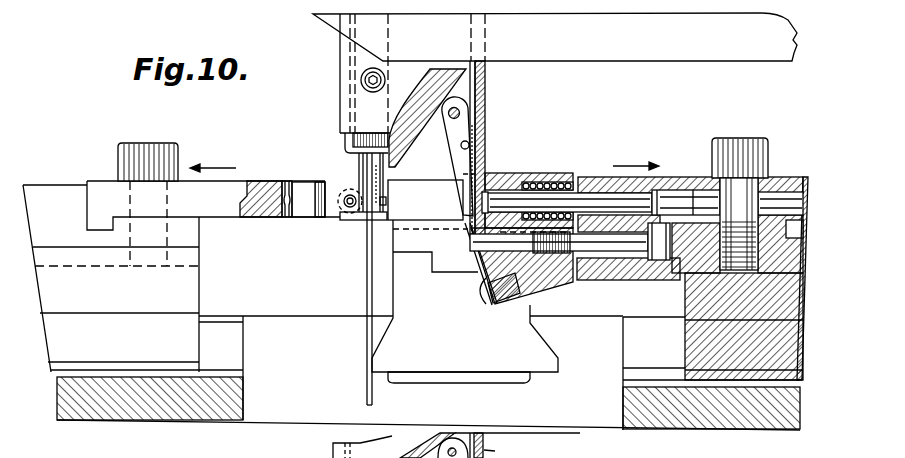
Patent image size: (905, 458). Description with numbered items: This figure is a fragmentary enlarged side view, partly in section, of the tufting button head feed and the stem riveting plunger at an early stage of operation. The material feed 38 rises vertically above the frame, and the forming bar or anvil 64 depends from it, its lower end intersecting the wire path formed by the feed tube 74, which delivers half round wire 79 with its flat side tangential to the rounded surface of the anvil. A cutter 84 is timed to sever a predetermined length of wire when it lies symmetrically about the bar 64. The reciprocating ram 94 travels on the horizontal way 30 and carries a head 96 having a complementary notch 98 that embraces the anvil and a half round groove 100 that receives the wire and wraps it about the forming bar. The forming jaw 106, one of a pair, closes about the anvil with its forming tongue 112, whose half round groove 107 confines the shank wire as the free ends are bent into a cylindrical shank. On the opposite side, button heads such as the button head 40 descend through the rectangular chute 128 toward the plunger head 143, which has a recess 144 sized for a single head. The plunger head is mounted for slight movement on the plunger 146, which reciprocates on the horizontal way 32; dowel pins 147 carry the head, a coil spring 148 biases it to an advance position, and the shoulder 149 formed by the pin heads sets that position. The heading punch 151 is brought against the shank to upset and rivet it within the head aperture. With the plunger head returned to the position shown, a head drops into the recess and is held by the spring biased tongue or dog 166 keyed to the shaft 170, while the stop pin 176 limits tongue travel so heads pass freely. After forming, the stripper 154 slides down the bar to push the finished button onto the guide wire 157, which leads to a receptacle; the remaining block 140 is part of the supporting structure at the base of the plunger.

The horizontal way 30 is at (168, 375).
The horizontal way 32 is at (755, 385).
The material feed 38 is at (542, 44).
The button head 40 is at (458, 216).
The forming bar or anvil 64 is at (360, 222).
The feed tube 74 is at (349, 193).
The half round wire 79 is at (346, 206).
The cutter 84 is at (305, 190).
The reciprocating ram 94 is at (188, 292).
The head 96 is at (245, 181).
The complementary notch 98 is at (290, 182).
The half round groove 100 is at (288, 218).
The forming jaw 106 is at (391, 207).
The half round groove 107 is at (391, 181).
The forming tongue 112 is at (402, 221).
The chute 128 is at (481, 87).
The housing block 140 is at (700, 343).
The plunger head 143 is at (480, 275).
The recess 144 is at (490, 176).
The plunger 146 is at (600, 176).
The dowel pin 147 is at (613, 262).
The coil spring 148 is at (550, 180).
The shoulder 149 is at (653, 262).
The heading punch 151 is at (640, 200).
The stripper 154 is at (345, 150).
The guide wire 157 is at (366, 268).
The spring biased tongue or dog 166 is at (452, 144).
The shaft 170 is at (460, 112).
The stop pin 176 is at (469, 145).